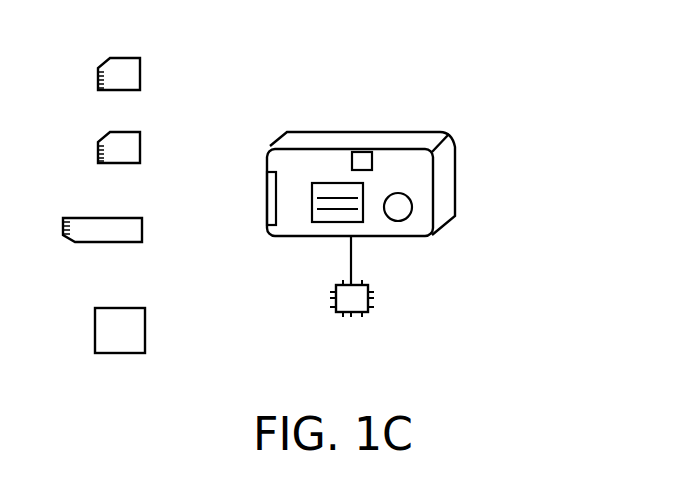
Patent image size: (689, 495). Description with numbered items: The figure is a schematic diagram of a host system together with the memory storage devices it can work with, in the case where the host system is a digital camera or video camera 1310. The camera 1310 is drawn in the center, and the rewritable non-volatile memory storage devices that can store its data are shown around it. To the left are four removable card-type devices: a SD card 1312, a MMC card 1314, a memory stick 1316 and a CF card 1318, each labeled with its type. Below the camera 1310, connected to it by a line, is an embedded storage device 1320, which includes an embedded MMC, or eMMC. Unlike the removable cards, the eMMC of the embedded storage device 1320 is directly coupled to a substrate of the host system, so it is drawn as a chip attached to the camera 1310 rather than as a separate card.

The digital camera 1310 is at (456, 172).
The SD card 1312 is at (141, 63).
The MMC card 1314 is at (141, 136).
The memory stick 1316 is at (143, 228).
The CF card 1318 is at (146, 322).
The embedded storage device 1320 is at (371, 300).